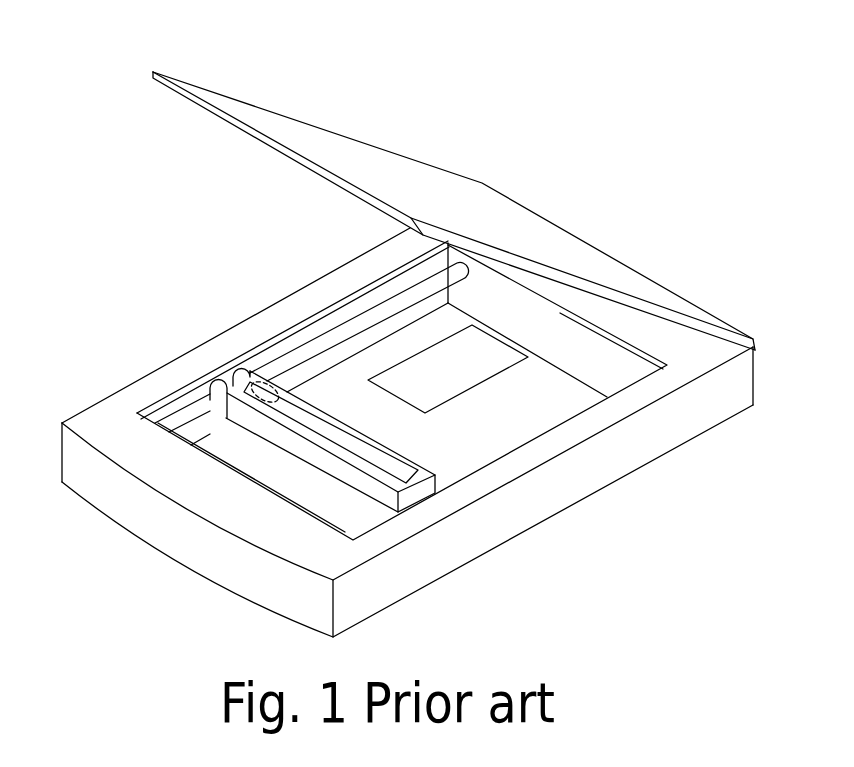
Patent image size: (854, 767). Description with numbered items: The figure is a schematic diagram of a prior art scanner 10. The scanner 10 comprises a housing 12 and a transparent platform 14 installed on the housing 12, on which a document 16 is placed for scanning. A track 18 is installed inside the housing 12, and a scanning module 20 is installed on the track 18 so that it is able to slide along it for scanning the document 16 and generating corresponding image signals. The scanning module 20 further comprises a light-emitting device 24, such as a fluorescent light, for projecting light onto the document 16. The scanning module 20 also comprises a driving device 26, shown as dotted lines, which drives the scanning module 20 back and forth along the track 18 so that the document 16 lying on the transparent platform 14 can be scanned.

The scanner 10 is at (627, 191).
The housing 12 is at (640, 442).
The transparent platform 14 is at (463, 460).
The document 16 is at (470, 373).
The track 18 is at (305, 358).
The scanning module 20 is at (393, 502).
The light-emitting device 24 is at (383, 470).
The driving device 26 is at (267, 387).